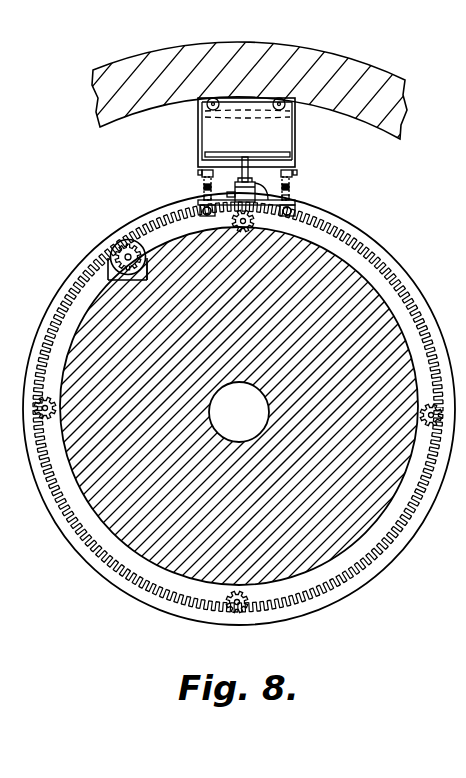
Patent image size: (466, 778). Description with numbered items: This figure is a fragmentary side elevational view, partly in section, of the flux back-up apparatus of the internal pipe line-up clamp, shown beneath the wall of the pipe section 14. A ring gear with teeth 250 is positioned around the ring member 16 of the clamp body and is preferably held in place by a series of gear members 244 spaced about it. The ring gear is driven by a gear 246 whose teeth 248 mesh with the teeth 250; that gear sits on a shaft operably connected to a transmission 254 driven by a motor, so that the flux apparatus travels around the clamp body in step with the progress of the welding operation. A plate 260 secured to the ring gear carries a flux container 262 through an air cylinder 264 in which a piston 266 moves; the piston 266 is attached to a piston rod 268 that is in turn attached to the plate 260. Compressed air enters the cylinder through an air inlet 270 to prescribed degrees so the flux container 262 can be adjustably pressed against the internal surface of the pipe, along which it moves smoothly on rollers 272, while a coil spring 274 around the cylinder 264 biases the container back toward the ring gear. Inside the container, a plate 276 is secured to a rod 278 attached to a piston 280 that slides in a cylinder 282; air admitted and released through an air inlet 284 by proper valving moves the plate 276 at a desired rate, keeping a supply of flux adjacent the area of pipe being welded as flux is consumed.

The pipe section 14 is at (130, 57).
The ring member 16 is at (82, 340).
The gear members 244 is at (57, 407).
The gear 246 is at (106, 241).
The teeth 248 is at (137, 282).
The teeth 250 is at (82, 297).
The transmission 254 is at (149, 268).
The plate 260 is at (253, 228).
The flux container 262 is at (198, 135).
The air cylinder 264 is at (295, 183).
The piston 266 is at (200, 181).
The piston rod 268 is at (205, 192).
The air inlet 270 is at (200, 172).
The rollers 272 is at (283, 99).
The coil spring 274 is at (295, 192).
The plate 276 is at (214, 152).
The rod 278 is at (293, 158).
The piston 280 is at (257, 195).
The cylinder 282 is at (280, 213).
The air inlet 284 is at (227, 205).